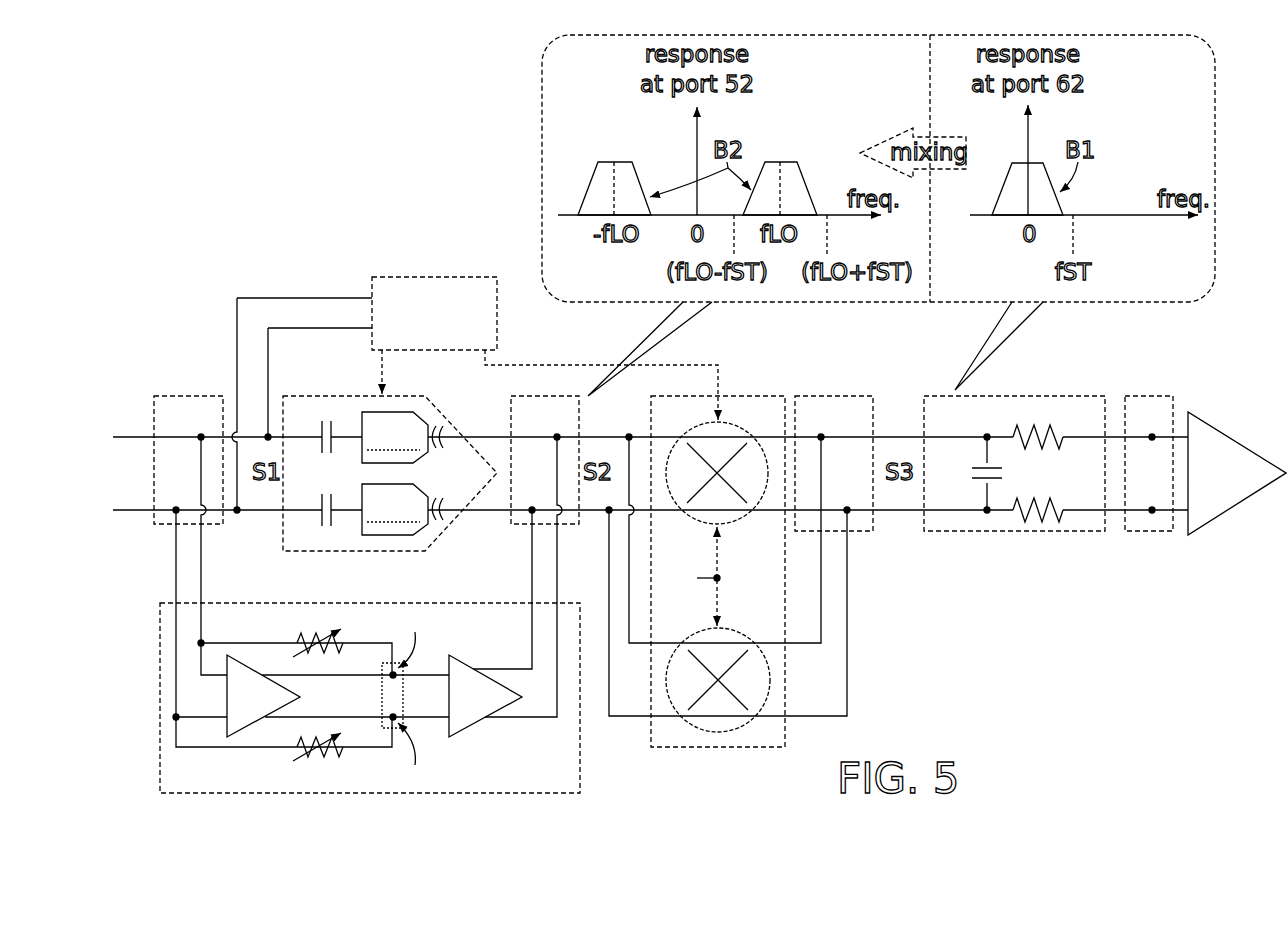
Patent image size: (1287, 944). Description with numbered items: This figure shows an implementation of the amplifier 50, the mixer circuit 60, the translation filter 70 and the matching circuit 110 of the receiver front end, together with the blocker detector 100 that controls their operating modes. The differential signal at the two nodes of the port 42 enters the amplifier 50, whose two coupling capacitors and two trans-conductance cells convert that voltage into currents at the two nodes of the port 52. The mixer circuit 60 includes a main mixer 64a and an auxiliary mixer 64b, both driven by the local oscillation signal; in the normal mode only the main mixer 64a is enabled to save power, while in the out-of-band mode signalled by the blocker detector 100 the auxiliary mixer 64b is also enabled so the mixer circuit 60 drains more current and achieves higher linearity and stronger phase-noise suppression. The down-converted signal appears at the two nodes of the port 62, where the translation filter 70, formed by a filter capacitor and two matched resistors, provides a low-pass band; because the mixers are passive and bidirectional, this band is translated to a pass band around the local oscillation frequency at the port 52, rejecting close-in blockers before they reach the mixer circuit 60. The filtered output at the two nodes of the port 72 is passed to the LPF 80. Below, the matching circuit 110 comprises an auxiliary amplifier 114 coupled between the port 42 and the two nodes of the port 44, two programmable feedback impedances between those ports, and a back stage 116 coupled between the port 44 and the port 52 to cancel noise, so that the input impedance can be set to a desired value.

The blocker detector 100 is at (382, 277).
The port 42 is at (218, 527).
The amplifier 50 is at (352, 551).
The port 52 is at (523, 527).
The mixer circuit 60 is at (718, 589).
The port 62 is at (852, 531).
The main mixer 64a is at (745, 513).
The auxiliary mixer 64b is at (758, 623).
The translation filter 70 is at (990, 532).
The port 72 is at (1152, 532).
The LPF 80 is at (1213, 433).
The matching circuit 110 is at (402, 617).
The amplifier 114 is at (272, 708).
The back stage 116 is at (495, 708).
The port 44 is at (382, 697).